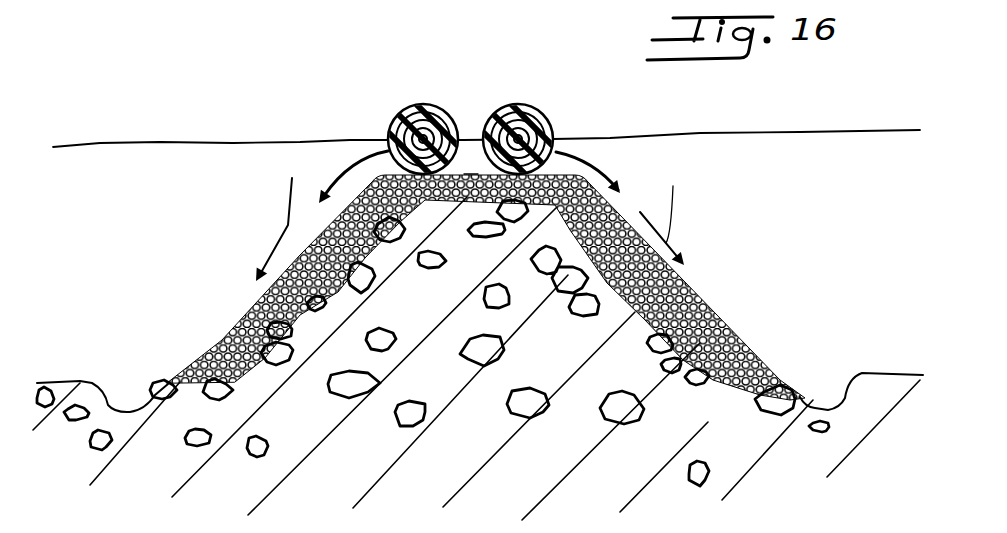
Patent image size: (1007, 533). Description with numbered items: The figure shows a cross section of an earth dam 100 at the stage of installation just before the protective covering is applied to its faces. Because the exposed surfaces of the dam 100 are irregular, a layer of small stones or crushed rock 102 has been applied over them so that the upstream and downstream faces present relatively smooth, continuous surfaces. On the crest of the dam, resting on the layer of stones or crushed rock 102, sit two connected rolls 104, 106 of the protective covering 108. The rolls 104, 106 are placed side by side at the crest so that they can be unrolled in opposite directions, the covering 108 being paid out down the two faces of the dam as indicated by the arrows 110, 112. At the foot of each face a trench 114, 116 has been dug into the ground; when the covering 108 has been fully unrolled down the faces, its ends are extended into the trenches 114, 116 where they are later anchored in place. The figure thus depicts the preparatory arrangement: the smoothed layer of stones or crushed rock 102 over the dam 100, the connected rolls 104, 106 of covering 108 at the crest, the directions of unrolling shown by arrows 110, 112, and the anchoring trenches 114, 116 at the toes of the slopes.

The dam 100 is at (705, 397).
The small stones or crushed rock 102 is at (696, 320).
The roll of protective covering 104 is at (412, 108).
The roll of protective covering 106 is at (560, 97).
The protective covering 108 is at (473, 175).
The arrow 110 is at (620, 188).
The arrow 112 is at (345, 168).
The trench 114 is at (835, 383).
The trench 116 is at (132, 392).